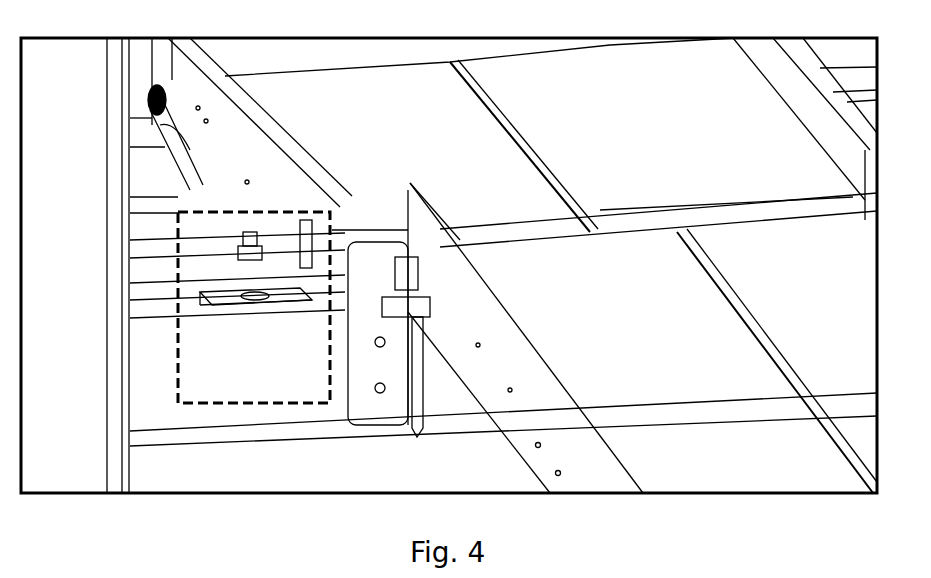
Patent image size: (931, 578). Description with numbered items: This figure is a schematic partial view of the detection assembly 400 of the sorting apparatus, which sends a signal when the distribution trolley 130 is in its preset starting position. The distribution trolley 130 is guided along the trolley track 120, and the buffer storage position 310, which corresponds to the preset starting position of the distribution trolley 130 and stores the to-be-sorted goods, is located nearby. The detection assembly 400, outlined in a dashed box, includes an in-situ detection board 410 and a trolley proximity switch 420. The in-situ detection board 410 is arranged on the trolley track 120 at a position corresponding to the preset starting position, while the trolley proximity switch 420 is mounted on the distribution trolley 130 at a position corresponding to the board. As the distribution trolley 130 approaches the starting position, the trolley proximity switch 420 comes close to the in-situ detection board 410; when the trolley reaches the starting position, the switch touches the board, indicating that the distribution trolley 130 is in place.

The trolley track 120 is at (148, 307).
The distribution trolley 130 is at (277, 122).
The buffer storage position 310 is at (544, 338).
The detection assembly 400 is at (295, 350).
The in-situ detection board 410 is at (170, 341).
The trolley proximity switch 420 is at (345, 203).